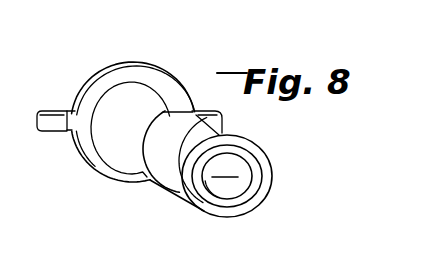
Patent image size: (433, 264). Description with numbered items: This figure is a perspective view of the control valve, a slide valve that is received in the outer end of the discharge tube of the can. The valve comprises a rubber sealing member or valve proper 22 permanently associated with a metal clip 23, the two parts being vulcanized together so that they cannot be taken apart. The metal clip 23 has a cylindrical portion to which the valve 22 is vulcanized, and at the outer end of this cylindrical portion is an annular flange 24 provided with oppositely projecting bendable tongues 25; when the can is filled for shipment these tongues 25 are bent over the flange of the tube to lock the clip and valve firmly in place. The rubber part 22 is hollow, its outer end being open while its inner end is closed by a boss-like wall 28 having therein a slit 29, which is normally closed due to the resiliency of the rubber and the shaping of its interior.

The rubber sealing member 22 is at (168, 177).
The metal clip 23 is at (130, 129).
The annular flange 24 is at (128, 70).
The bendable tongues 25 is at (50, 111).
The boss-like wall 28 is at (235, 163).
The slit 29 is at (227, 177).